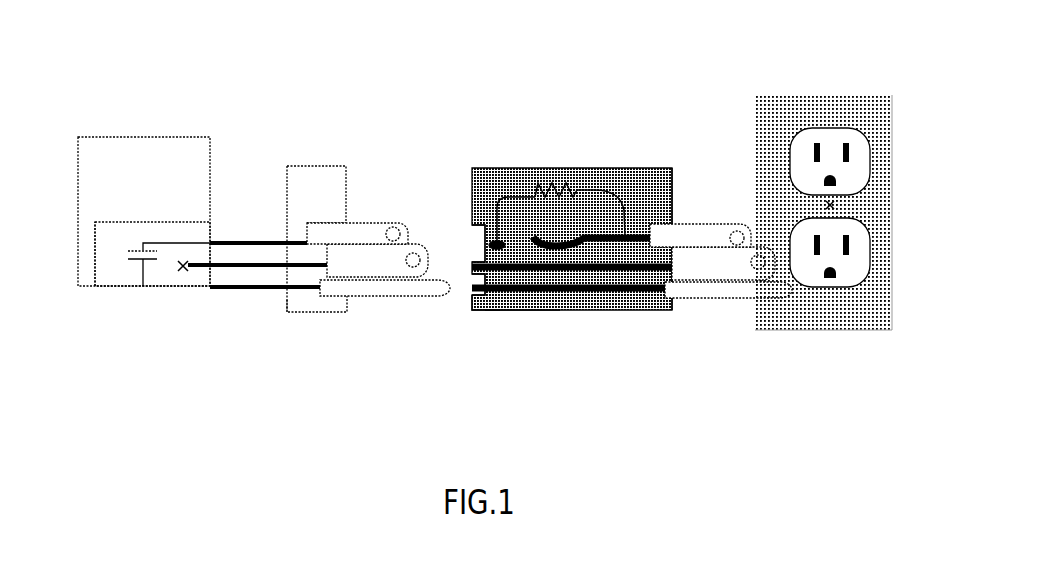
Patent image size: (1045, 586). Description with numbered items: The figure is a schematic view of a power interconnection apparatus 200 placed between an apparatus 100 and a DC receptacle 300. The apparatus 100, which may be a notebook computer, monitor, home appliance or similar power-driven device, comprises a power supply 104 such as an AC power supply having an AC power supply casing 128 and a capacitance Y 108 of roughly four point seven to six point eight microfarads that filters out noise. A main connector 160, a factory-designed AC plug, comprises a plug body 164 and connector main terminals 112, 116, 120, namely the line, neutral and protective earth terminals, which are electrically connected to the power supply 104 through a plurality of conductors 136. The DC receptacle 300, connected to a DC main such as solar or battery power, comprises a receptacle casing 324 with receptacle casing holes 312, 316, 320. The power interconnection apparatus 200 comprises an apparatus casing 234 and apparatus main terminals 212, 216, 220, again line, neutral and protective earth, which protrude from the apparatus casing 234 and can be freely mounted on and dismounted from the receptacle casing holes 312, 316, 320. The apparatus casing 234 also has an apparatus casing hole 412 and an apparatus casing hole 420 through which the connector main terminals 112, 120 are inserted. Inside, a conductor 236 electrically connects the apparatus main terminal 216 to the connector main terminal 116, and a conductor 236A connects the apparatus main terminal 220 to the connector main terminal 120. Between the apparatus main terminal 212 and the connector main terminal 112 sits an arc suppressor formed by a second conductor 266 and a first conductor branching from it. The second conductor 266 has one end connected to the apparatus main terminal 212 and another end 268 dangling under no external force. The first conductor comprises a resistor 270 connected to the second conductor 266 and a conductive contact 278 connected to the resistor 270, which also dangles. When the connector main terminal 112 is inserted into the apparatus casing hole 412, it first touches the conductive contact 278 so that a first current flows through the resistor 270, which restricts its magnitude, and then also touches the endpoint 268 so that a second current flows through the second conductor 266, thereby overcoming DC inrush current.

The apparatus 100 is at (120, 136).
The power supply 104 is at (118, 278).
The capacitance Y 108 is at (148, 262).
The connector main terminal 112 is at (378, 244).
The connector main terminal 116 is at (397, 287).
The connector main terminal 120 is at (363, 298).
The AC power supply casing 128 is at (96, 268).
The conductors 136 is at (276, 242).
The main connector 160 is at (310, 165).
The plug body 164 is at (290, 312).
The power interconnection apparatus 200 is at (597, 249).
The apparatus main terminal 212 is at (687, 223).
The apparatus main terminal 216 is at (713, 290).
The apparatus main terminal 220 is at (678, 297).
The apparatus casing 234 is at (540, 312).
The conductor 236 is at (583, 310).
The conductor 236A is at (625, 310).
The second conductor 266 is at (532, 310).
The endpoint of second conductor 268 is at (490, 312).
The resistor 270 is at (560, 198).
The conductive contact 278 is at (493, 205).
The DC receptacle 300 is at (798, 205).
The receptacle casing hole 312 is at (812, 152).
The receptacle casing hole 316 is at (840, 143).
The receptacle casing hole 320 is at (820, 185).
The receptacle casing 324 is at (886, 322).
The apparatus casing hole 412 is at (478, 274).
The apparatus casing hole 420 is at (470, 295).